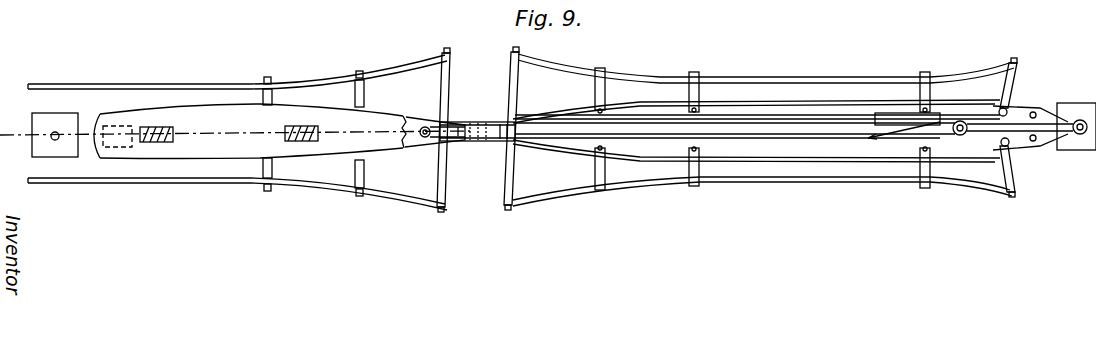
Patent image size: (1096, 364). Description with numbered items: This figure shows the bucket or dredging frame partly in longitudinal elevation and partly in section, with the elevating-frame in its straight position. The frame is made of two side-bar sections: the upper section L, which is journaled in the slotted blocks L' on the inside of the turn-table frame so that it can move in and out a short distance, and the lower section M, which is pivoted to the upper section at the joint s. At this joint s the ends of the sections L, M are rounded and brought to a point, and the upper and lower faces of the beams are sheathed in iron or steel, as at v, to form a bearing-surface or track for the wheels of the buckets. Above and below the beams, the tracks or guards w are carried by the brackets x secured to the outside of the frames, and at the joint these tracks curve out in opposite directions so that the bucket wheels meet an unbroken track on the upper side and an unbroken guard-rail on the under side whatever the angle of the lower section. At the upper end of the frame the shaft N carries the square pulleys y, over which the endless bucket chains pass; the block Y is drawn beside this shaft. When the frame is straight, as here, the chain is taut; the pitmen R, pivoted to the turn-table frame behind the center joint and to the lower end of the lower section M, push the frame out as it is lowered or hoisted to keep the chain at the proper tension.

The shaft N is at (51, 137).
The anchor block Y is at (22, 103).
The tracks or guards w is at (521, 133).
The iron or steel sheathing v is at (547, 131).
The slotted blocks L' is at (117, 119).
The upper section of the bucket-frame L is at (229, 133).
The square pulleys y is at (381, 133).
The brackets x is at (721, 129).
The joint s is at (483, 122).
The pitmen R is at (778, 130).
The lower section of the bucket-frame M is at (757, 115).